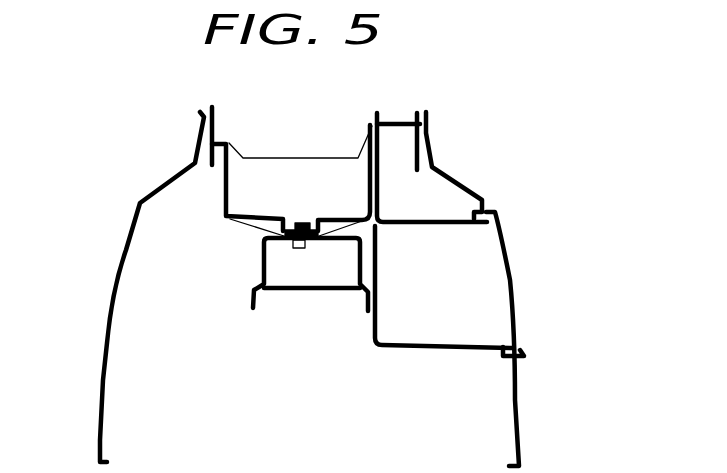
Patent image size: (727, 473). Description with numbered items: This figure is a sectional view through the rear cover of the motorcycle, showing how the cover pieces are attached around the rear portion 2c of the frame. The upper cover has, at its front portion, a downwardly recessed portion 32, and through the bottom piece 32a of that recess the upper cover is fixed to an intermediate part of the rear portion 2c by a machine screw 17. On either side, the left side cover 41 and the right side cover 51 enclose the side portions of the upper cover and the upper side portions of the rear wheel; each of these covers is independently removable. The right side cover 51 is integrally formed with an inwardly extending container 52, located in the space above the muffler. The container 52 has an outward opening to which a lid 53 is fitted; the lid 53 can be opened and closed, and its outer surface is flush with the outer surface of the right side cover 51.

The left side cover 41 is at (104, 347).
The downwardly recessed portion 32 is at (236, 178).
The bottom piece 32a is at (285, 221).
The machine screw 17 is at (310, 224).
The rear portion of the frame 2c is at (340, 243).
The right side cover 51 is at (471, 183).
The container 52 is at (450, 338).
The lid 53 is at (517, 302).